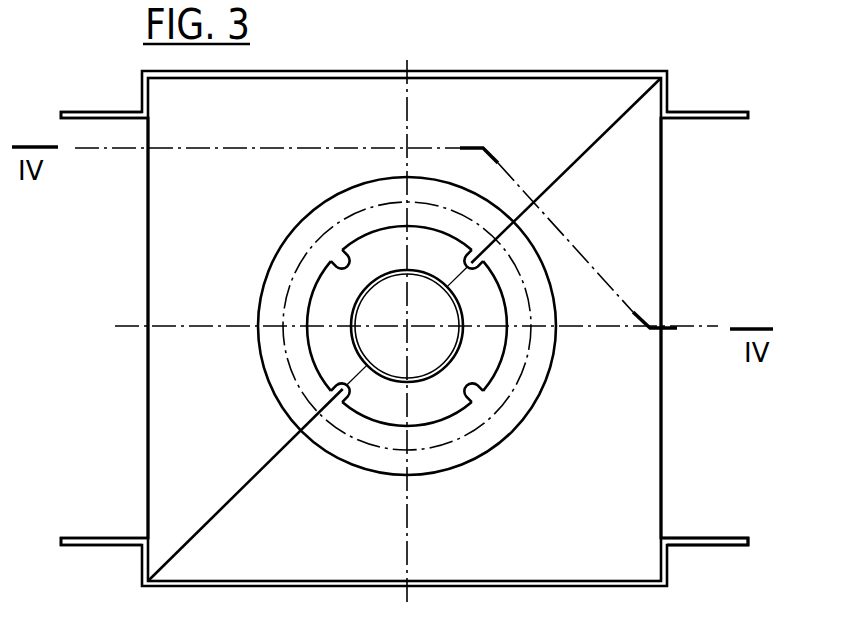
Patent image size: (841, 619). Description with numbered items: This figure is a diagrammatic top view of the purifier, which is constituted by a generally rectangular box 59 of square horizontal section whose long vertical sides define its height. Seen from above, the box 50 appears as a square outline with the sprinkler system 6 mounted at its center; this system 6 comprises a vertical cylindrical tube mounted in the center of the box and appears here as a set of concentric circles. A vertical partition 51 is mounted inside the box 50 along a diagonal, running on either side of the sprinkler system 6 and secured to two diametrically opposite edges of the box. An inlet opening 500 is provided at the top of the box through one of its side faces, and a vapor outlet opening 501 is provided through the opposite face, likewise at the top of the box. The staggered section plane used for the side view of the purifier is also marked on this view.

The box 50 is at (116, 94).
The inlet opening 500 is at (108, 323).
The vapor outlet opening 501 is at (745, 315).
The vertical partition 51 is at (252, 483).
The sprinkler system 6 is at (496, 456).
The rectangular box 59 is at (668, 562).